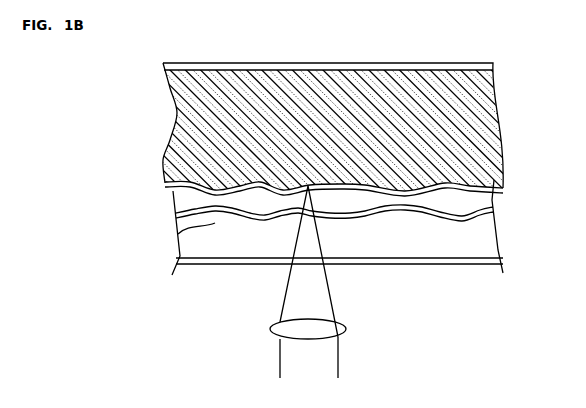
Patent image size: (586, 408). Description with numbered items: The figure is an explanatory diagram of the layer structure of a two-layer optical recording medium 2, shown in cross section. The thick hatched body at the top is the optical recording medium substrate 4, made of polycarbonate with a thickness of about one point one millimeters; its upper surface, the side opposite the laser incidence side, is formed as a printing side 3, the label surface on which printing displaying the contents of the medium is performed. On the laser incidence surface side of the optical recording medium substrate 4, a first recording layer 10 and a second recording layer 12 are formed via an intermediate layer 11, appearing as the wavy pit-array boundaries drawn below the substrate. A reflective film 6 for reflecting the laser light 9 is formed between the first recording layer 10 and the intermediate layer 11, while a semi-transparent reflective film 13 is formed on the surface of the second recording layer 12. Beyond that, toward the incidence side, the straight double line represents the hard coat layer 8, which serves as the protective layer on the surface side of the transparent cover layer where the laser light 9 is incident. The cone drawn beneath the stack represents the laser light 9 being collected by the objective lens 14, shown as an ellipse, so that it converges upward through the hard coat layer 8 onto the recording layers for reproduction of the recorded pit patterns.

The two-layer optical recording medium 2 is at (309, 62).
The printing side 3 is at (443, 62).
The optical recording medium substrate 4 is at (498, 128).
The reflective film 6 is at (506, 186).
The hard coat layer 8 is at (504, 262).
The laser light 9 is at (332, 300).
The first recording layer 10 is at (173, 194).
The intermediate layer 11 is at (493, 196).
The second recording layer 12 is at (467, 238).
The semi-transparent reflective film 13 is at (178, 234).
The objective lens 14 is at (338, 337).